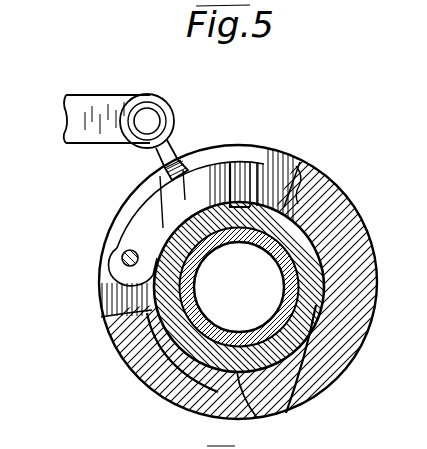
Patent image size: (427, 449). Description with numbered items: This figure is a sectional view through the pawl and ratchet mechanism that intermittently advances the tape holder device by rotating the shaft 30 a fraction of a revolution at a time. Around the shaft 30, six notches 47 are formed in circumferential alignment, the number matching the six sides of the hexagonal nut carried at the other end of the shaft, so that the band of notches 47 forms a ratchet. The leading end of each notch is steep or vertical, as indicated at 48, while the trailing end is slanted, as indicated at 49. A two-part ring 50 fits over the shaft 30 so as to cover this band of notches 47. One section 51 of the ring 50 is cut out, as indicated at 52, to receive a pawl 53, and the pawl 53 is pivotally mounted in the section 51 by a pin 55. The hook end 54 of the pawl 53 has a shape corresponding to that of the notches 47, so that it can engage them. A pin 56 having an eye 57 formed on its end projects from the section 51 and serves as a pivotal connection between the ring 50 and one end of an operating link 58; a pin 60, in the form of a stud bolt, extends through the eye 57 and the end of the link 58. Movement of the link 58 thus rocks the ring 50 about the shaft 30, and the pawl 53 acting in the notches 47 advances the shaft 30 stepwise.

The rotatable shaft 30 is at (148, 292).
The notches 47 is at (346, 226).
The steep leading end of notch 48 is at (272, 412).
The slanted trailing end of notch 49 is at (196, 412).
The two-part ring 50 is at (373, 265).
The section of the ring 51 is at (287, 146).
The cut-out 52 is at (301, 185).
The pawl 53 is at (211, 173).
The hook end of pawl 54 is at (249, 207).
The pin 55 is at (126, 251).
The pin 56 is at (176, 158).
The eye 57 is at (151, 97).
The operating link 58 is at (84, 102).
The pin 60 is at (144, 116).